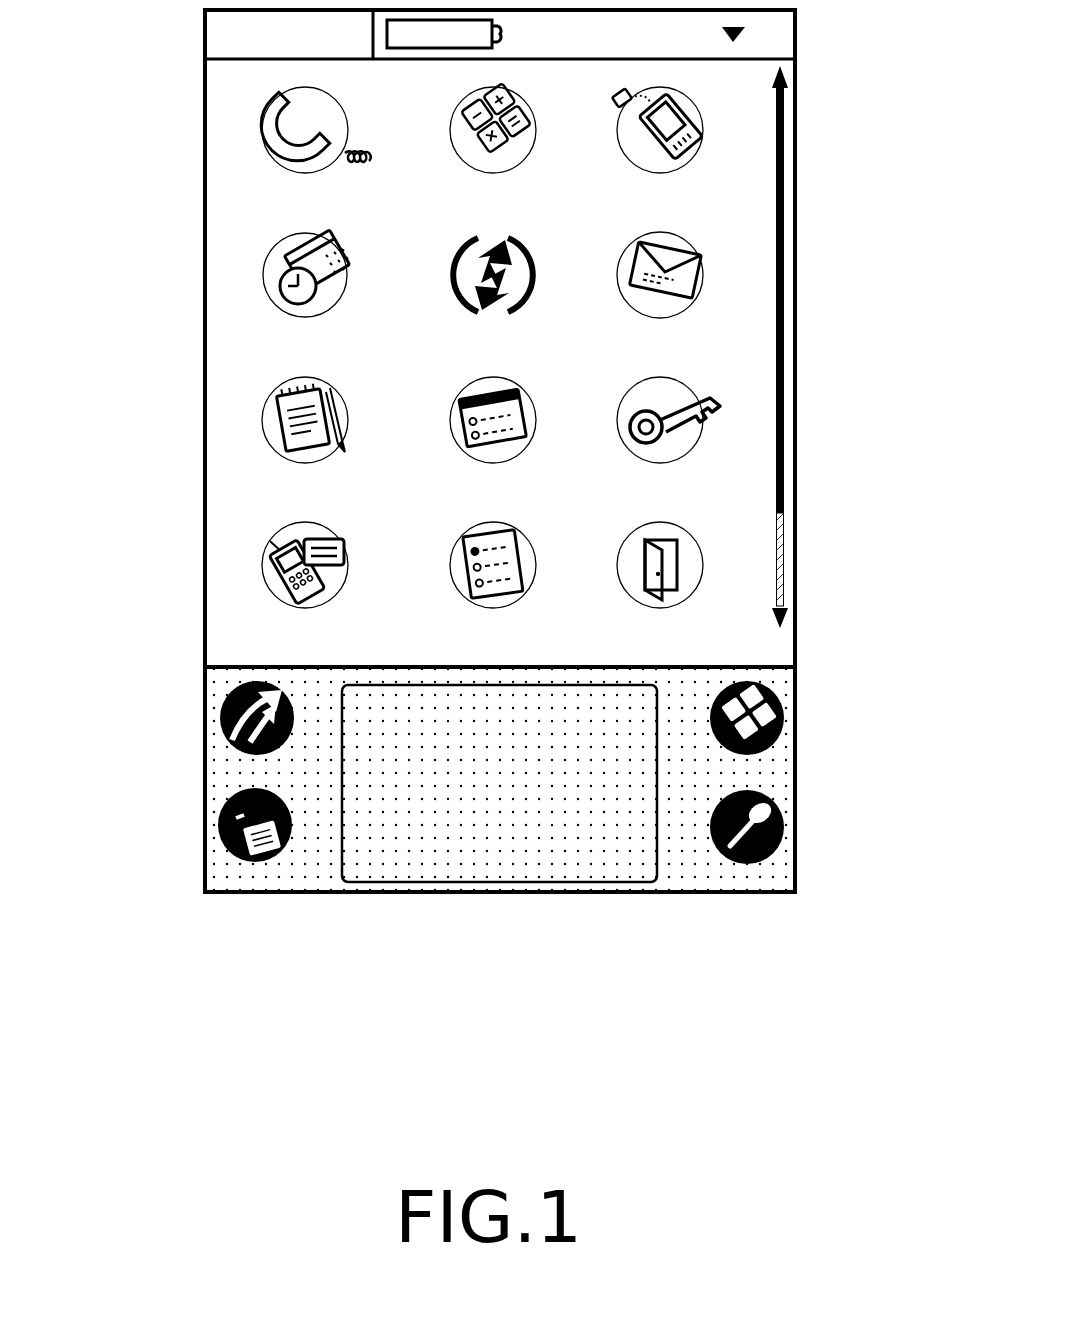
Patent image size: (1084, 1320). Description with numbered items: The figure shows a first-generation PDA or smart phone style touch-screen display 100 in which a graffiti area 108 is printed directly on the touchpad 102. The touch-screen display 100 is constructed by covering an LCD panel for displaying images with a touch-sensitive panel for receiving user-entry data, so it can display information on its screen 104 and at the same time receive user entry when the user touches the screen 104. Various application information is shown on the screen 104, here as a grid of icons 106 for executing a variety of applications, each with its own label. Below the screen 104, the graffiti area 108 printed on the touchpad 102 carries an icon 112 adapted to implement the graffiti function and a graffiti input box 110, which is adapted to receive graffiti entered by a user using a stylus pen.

The touch-screen display 100 is at (800, 158).
The touchpad 102 is at (494, 816).
The screen 104 is at (748, 346).
The icons 106 is at (266, 274).
The graffiti area 108 is at (783, 787).
The graffiti input box 110 is at (660, 862).
The icon 112 is at (222, 840).